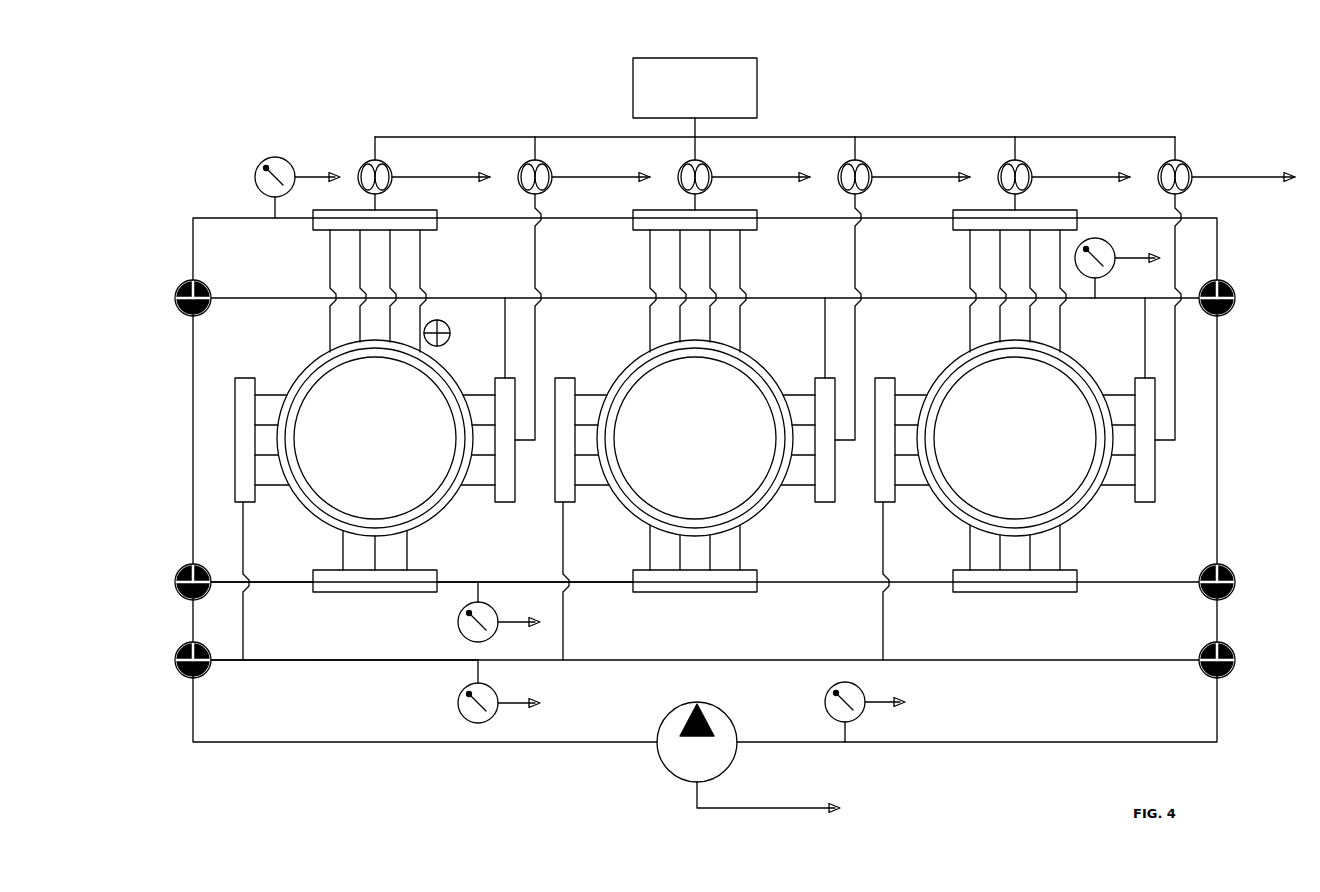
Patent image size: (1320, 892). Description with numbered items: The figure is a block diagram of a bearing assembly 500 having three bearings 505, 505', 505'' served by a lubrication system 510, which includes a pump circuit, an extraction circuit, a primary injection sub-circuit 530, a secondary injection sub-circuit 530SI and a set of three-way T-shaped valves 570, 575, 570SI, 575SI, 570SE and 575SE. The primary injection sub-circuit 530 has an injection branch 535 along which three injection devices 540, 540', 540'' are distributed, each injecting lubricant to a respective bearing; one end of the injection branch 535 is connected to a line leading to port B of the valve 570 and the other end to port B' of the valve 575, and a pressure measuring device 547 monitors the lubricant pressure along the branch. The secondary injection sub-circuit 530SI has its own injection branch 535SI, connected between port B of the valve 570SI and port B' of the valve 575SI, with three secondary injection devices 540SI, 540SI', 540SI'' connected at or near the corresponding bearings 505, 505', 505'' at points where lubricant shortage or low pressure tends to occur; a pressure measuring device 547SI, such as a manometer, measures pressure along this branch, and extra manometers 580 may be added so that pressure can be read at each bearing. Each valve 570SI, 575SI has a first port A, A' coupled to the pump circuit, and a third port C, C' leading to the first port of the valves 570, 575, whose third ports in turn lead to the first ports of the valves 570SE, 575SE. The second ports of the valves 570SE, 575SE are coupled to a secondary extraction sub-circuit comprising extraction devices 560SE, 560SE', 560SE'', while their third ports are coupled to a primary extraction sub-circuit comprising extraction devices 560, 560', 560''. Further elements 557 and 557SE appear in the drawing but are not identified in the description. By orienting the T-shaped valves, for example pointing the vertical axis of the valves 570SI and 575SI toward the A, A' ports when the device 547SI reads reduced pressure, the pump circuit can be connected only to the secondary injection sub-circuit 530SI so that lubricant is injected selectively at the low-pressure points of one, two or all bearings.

The bearing assembly 500 is at (1172, 93).
The bearing 505 is at (375, 438).
The bearing 505' is at (695, 438).
The bearing 505'' is at (1015, 438).
The lubrication system 510 is at (450, 786).
The primary injection sub-circuit 530 is at (298, 568).
The secondary injection sub-circuit 530SI is at (236, 673).
The injection branch 535 is at (583, 584).
The injection branch 535SI is at (305, 662).
The injection device 540 is at (361, 583).
The injection device 540' is at (695, 580).
The injection device 540'' is at (1015, 580).
The secondary injection device 540SI is at (262, 493).
The secondary injection device 540SI' is at (583, 491).
The secondary injection device 540SI'' is at (905, 493).
The pressure measuring device 547 is at (458, 622).
The pressure measuring device 547SI is at (458, 703).
The flow sensor 557 is at (267, 160).
The exit flow sensor 557SE is at (1121, 266).
The extraction device 560 is at (395, 281).
The extraction device 560' is at (674, 281).
The extraction device 560'' is at (994, 281).
The extraction device 560SE is at (508, 373).
The extraction device 560SE' is at (831, 373).
The extraction device 560SE'' is at (1141, 381).
The three-way T-shaped valve 570 is at (188, 566).
The three-way T-shaped valve 570SE is at (183, 314).
The three-way T-shaped valve 570SI is at (185, 676).
The three-way T-shaped valve 575 is at (1232, 594).
The three-way T-shaped valve 575SE is at (1230, 312).
The three-way T-shaped valve 575SI is at (1232, 672).
The manometer 580 is at (450, 330).